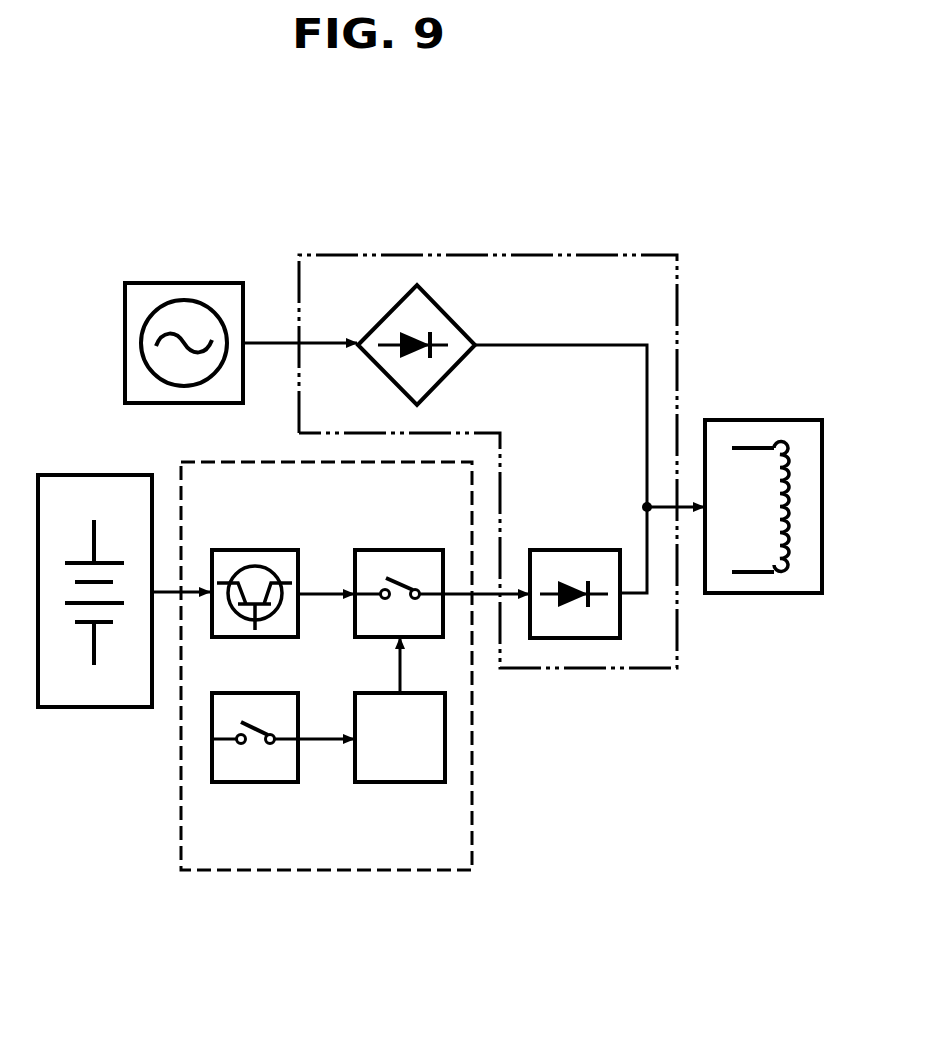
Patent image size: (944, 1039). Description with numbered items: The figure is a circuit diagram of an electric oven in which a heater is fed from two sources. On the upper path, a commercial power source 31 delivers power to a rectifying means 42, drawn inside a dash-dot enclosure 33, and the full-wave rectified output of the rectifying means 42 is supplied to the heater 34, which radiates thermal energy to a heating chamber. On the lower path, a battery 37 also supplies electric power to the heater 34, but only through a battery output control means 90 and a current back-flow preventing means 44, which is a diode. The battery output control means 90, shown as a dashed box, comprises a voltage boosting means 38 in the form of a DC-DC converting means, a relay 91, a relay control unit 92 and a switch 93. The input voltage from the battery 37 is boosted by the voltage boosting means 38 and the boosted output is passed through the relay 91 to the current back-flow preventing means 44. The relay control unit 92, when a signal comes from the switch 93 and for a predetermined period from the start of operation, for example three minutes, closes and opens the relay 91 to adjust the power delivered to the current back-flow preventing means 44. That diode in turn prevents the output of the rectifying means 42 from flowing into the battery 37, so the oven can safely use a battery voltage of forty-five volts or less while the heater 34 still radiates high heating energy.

The commercial power source 31 is at (184, 283).
The rectifier circuit 33 is at (677, 305).
The heater 34 is at (762, 420).
The battery 37 is at (93, 707).
The voltage boosting means 38 is at (255, 550).
The rectifying means 42 is at (442, 303).
The current back-flow preventing means 44 is at (575, 550).
The battery output control means 90 is at (472, 838).
The relay 91 is at (398, 550).
The relay control unit 92 is at (400, 782).
The switch 93 is at (255, 782).